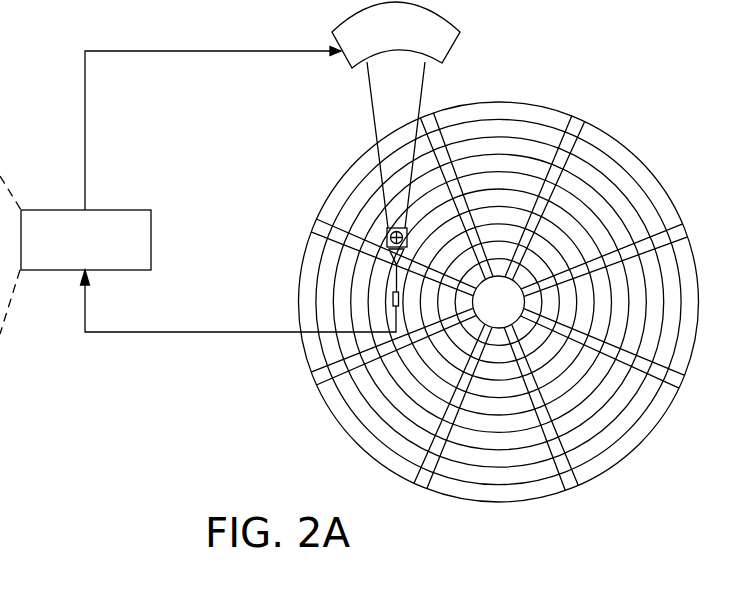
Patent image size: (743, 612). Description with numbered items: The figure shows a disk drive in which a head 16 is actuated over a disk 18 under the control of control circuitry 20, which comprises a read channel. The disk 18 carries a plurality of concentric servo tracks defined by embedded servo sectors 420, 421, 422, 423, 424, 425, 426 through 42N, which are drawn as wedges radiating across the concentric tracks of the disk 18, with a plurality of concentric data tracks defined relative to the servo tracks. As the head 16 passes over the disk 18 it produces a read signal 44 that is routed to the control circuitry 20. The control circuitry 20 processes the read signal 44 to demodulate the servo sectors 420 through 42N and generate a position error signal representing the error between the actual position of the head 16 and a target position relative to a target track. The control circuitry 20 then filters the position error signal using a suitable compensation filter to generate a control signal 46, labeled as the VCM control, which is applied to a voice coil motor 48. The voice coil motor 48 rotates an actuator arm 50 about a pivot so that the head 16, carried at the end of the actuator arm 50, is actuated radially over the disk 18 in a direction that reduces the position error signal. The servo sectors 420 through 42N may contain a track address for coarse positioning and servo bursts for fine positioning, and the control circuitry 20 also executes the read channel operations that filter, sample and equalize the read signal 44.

The head 16 is at (384, 304).
The disk 18 is at (636, 136).
The control circuitry 20 is at (121, 210).
The servo sector 420 is at (578, 118).
The servo sector 421 is at (681, 231).
The servo sector 422 is at (680, 382).
The servo sector 423 is at (573, 490).
The servo sector 424 is at (420, 488).
The servo sector 425 is at (316, 379).
The servo sector 426 is at (320, 225).
The servo sector 42N is at (434, 117).
The read signal 44 is at (207, 333).
The control signal 46 is at (85, 118).
The voice coil motor (VCM) 48 is at (350, 66).
The actuator arm 50 is at (378, 130).